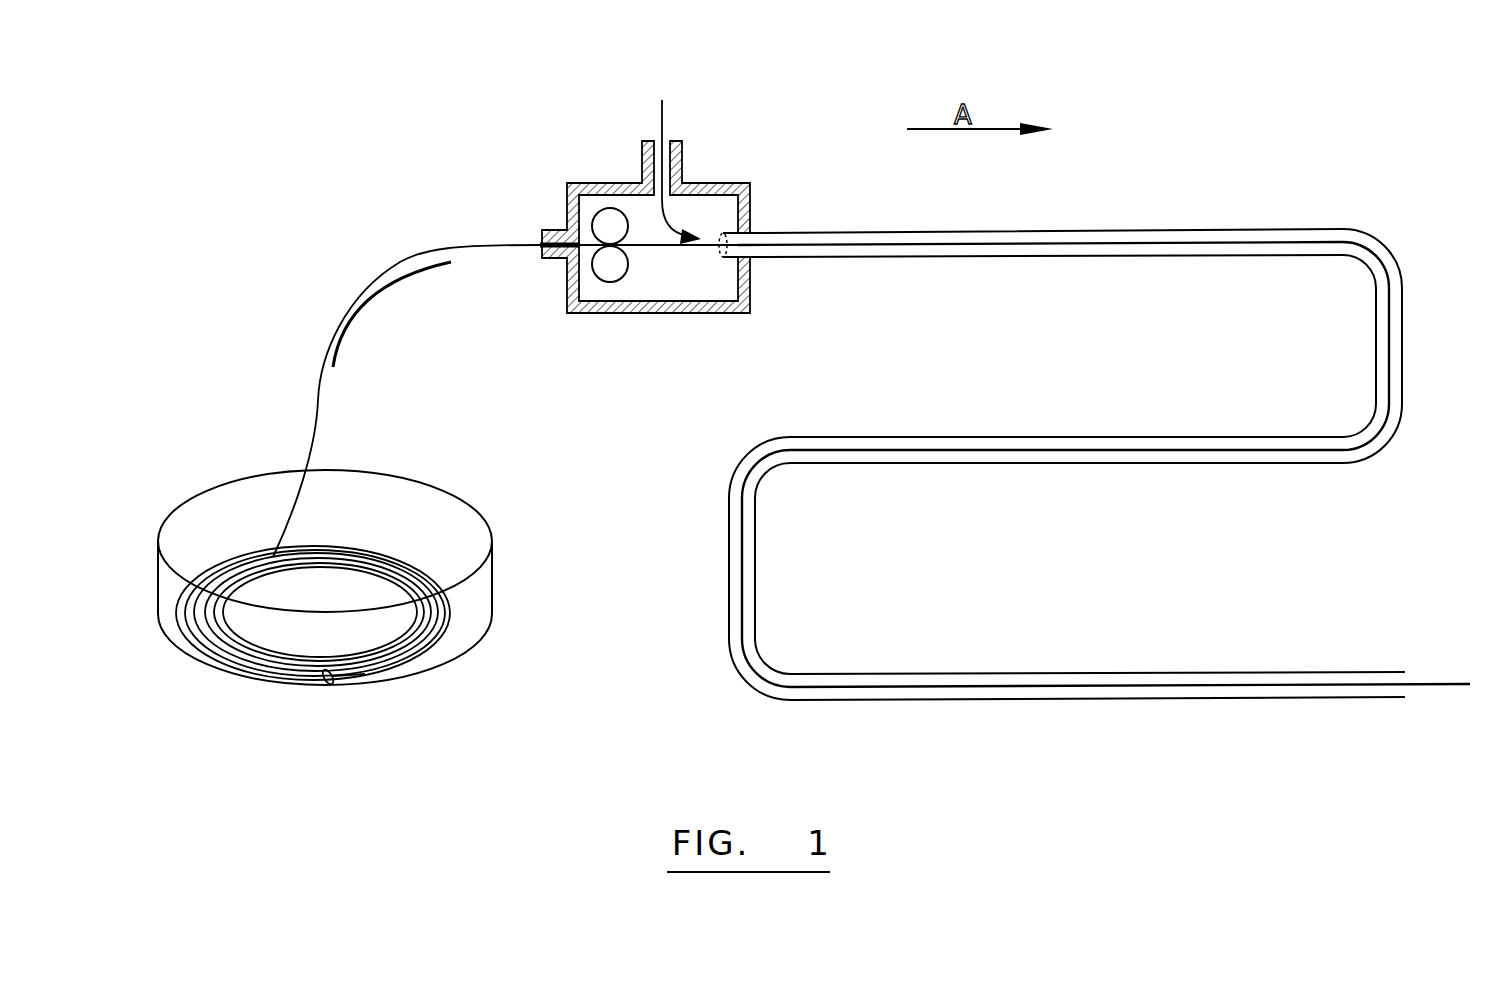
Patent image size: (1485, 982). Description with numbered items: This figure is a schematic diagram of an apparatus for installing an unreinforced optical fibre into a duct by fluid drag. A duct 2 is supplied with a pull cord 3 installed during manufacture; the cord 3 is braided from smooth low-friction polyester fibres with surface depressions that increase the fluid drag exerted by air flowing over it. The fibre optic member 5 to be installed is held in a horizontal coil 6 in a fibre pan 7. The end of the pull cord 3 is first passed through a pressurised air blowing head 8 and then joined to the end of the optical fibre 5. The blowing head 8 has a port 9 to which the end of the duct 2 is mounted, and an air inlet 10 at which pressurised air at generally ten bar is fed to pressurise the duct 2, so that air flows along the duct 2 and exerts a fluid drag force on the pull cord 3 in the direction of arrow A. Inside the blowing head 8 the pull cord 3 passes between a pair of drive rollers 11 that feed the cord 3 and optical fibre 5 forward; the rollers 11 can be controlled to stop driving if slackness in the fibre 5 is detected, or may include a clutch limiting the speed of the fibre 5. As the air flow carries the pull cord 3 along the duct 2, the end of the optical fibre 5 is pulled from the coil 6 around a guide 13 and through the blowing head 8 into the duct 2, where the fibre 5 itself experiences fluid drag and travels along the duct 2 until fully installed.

The duct 2 is at (1188, 229).
The pull cord 3 is at (496, 239).
The fibre optic member 5 is at (383, 270).
The horizontal coil 6 is at (245, 563).
The fibre pan 7 is at (492, 584).
The pressurised air blowing head 8 is at (575, 183).
The port 9 is at (752, 258).
The air inlet 10 is at (667, 138).
The drive rollers 11 is at (608, 215).
The guide 13 is at (393, 283).